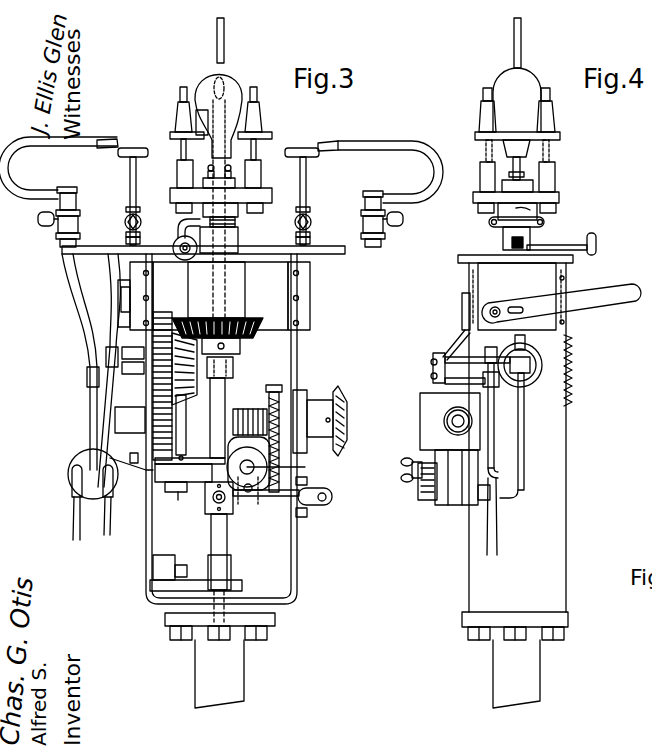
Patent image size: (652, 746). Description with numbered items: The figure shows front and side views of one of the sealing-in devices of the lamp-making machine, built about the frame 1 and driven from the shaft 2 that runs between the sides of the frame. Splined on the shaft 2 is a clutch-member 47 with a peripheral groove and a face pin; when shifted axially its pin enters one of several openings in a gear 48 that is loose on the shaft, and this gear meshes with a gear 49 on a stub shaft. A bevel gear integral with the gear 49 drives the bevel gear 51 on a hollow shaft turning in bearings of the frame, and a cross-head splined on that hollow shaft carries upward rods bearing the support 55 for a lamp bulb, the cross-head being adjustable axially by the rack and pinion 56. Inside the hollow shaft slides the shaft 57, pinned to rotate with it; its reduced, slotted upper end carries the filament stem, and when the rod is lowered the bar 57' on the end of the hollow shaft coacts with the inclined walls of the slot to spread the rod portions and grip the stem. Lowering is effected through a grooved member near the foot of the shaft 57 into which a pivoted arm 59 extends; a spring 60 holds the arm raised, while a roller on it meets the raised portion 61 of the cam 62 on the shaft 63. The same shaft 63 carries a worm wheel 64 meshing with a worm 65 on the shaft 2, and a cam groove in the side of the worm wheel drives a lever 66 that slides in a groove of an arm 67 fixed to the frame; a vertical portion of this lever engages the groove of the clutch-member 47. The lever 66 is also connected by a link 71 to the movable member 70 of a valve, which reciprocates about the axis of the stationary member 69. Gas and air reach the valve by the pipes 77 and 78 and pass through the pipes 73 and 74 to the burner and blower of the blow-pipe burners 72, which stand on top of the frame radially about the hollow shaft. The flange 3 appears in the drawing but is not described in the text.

In FIG. 3, the frame 1 is at (298, 555).
In FIG. 4, the frame 1 is at (568, 530).
In FIG. 3, the shaft 2 is at (204, 416).
In FIG. 4, the shaft 2 is at (448, 420).
In FIG. 3, the flange 3 is at (340, 452).
In FIG. 3, the clutch-member 47 is at (184, 440).
In FIG. 3, the gear 48 is at (160, 396).
In FIG. 3, the gear 49 is at (168, 314).
In FIG. 3, the bevel gear 51 is at (248, 333).
In FIG. 3, the support for a lamp bulb 55 is at (250, 136).
In FIG. 4, the support for a lamp bulb 55 is at (560, 136).
In FIG. 4, the rack and pinion 56 is at (530, 242).
In FIG. 3, the shaft 57 is at (239, 568).
In FIG. 3, the bar 57' is at (247, 176).
In FIG. 3, the pivoted arm 59 is at (250, 506).
In FIG. 3, the spring 60 is at (270, 398).
In FIG. 3, the raised portion 61 is at (248, 463).
In FIG. 3, the cam 62 is at (262, 508).
In FIG. 3, the shaft 63 is at (275, 468).
In FIG. 3, the worm wheel 64 is at (300, 457).
In FIG. 3, the worm 65 is at (250, 414).
In FIG. 3, the lever 66 is at (194, 482).
In FIG. 3, the arm 67 is at (177, 494).
In FIG. 3, the stationary member 69 is at (70, 474).
In FIG. 4, the stationary member 69 is at (462, 508).
In FIG. 4, the movable member 70 is at (442, 505).
In FIG. 3, the link 71 is at (158, 462).
In FIG. 4, the link 71 is at (410, 468).
In FIG. 3, the blow-pipe burners 72 is at (131, 147).
In FIG. 3, the pipe 73 is at (107, 397).
In FIG. 4, the pipe 73 is at (525, 448).
In FIG. 3, the pipe 74 is at (90, 412).
In FIG. 4, the pipe 74 is at (495, 418).
In FIG. 3, the pipe 77 is at (76, 518).
In FIG. 4, the pipe 77 is at (494, 524).
In FIG. 3, the pipe 78 is at (104, 530).
In FIG. 4, the pipe 78 is at (498, 532).